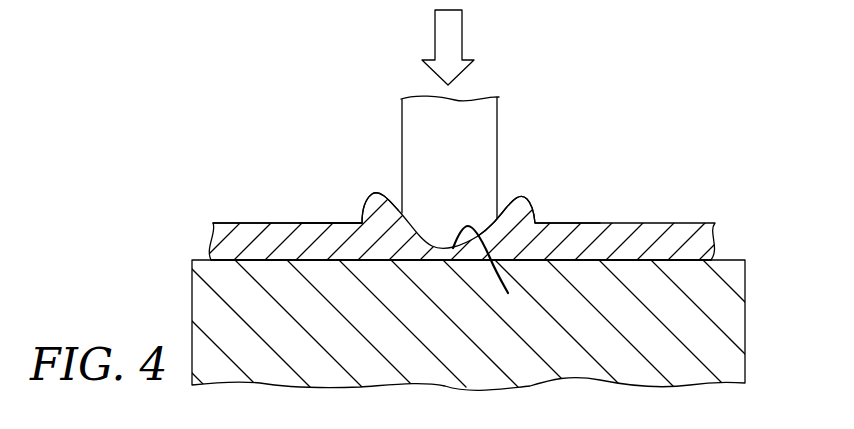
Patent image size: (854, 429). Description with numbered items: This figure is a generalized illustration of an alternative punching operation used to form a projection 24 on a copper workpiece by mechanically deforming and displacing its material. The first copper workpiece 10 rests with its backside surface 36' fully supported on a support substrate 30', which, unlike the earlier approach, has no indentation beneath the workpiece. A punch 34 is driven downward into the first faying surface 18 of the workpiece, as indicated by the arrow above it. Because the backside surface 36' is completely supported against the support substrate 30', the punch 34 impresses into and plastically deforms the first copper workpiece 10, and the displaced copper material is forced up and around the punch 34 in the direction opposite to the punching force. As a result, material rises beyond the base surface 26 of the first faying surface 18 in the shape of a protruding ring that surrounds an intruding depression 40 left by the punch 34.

The first copper workpiece 10 is at (238, 225).
The first faying surface 18 is at (278, 222).
The projection 24 is at (377, 192).
The base surface 26 is at (343, 223).
The punch 34 is at (462, 148).
The backside surface 36' is at (461, 283).
The intruding depression 40 is at (492, 273).
The support substrate 30' is at (454, 325).